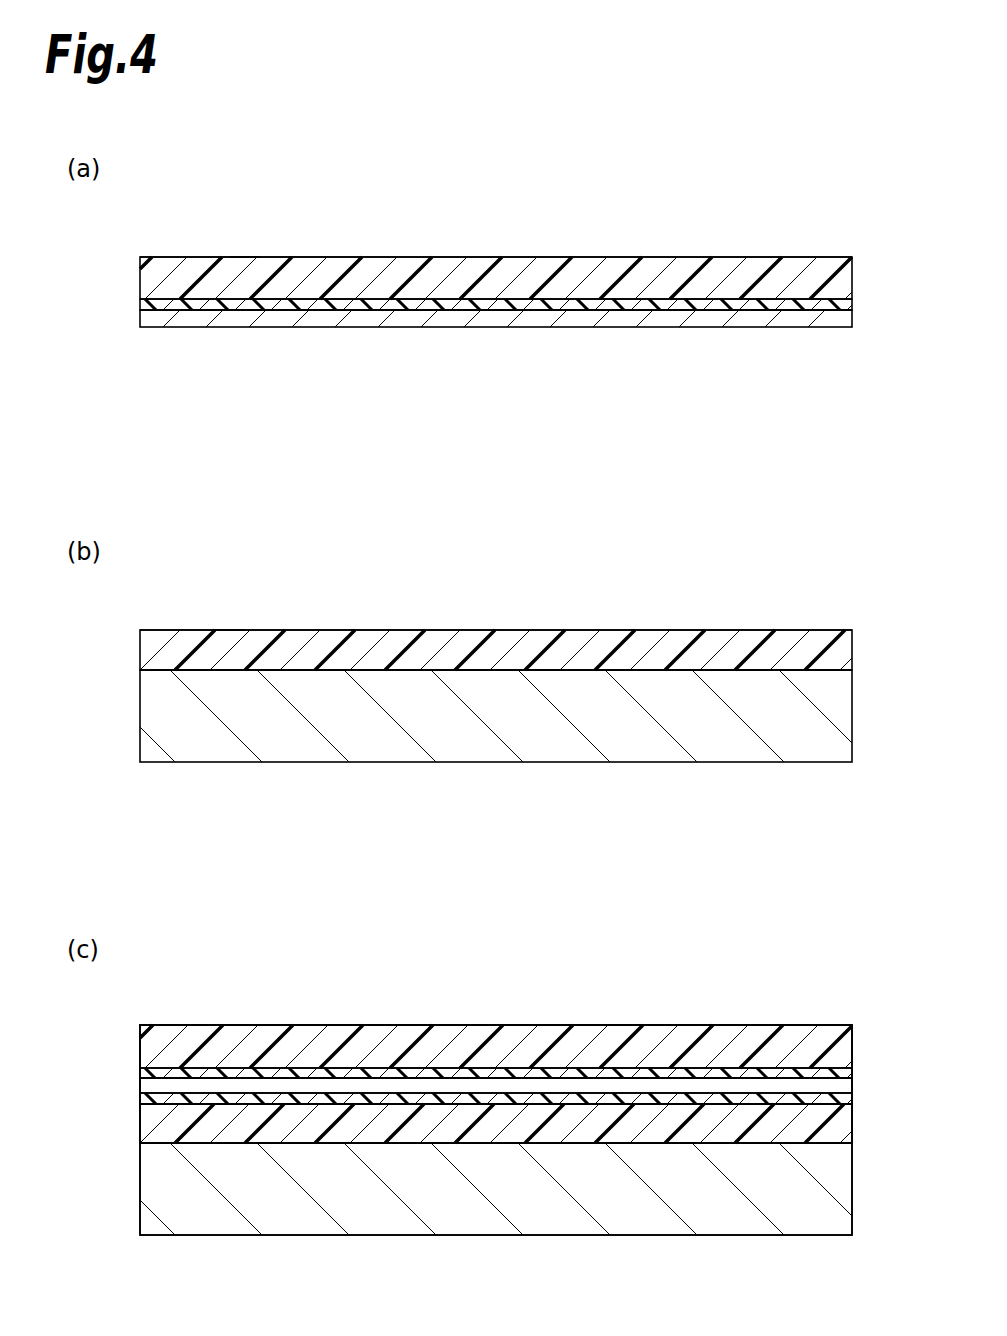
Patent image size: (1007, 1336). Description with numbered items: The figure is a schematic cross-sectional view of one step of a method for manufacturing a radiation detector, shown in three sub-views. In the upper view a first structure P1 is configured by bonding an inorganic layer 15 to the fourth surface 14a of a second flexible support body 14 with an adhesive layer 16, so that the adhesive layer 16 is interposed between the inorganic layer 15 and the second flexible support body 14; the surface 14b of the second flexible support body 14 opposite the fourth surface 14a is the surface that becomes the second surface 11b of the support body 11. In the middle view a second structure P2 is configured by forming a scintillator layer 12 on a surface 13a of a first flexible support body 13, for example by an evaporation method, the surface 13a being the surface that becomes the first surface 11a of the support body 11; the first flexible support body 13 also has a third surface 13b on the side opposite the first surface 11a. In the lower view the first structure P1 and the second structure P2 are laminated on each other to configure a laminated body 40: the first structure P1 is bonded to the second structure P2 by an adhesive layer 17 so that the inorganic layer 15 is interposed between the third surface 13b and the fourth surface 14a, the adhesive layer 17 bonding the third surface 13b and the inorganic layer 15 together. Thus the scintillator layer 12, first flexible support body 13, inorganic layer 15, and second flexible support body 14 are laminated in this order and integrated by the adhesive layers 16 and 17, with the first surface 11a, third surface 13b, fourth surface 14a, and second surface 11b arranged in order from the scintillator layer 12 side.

The support body 11 is at (496, 1084).
The first surface 11a is at (633, 672).
The second surface 11b is at (592, 257).
The scintillator layer 12 is at (833, 705).
The first flexible support body 13 is at (833, 653).
The surface 13a is at (496, 860).
The third surface 13b is at (545, 630).
The second flexible support body 14 is at (813, 280).
The fourth surface 14a is at (507, 308).
The surface 14b is at (496, 609).
The inorganic layer 15 is at (807, 320).
The adhesive layer 16 is at (737, 307).
The adhesive layer 17 is at (788, 1102).
The laminated body 40 is at (202, 1025).
The first structure P1 is at (237, 257).
The second structure P2 is at (227, 630).